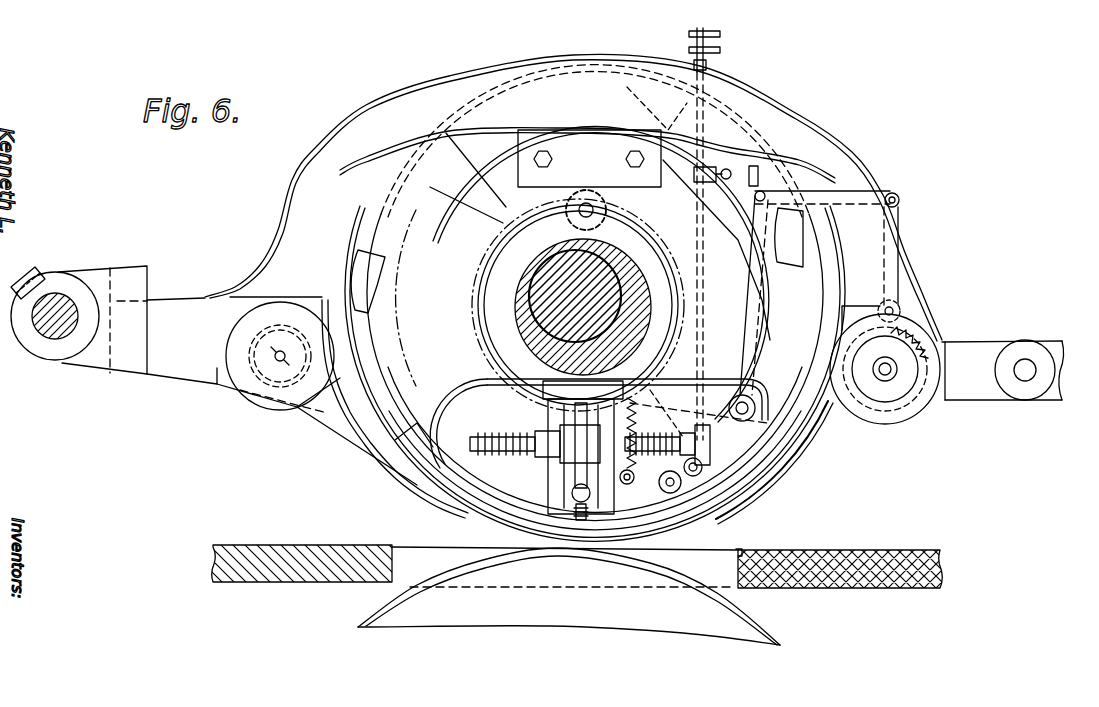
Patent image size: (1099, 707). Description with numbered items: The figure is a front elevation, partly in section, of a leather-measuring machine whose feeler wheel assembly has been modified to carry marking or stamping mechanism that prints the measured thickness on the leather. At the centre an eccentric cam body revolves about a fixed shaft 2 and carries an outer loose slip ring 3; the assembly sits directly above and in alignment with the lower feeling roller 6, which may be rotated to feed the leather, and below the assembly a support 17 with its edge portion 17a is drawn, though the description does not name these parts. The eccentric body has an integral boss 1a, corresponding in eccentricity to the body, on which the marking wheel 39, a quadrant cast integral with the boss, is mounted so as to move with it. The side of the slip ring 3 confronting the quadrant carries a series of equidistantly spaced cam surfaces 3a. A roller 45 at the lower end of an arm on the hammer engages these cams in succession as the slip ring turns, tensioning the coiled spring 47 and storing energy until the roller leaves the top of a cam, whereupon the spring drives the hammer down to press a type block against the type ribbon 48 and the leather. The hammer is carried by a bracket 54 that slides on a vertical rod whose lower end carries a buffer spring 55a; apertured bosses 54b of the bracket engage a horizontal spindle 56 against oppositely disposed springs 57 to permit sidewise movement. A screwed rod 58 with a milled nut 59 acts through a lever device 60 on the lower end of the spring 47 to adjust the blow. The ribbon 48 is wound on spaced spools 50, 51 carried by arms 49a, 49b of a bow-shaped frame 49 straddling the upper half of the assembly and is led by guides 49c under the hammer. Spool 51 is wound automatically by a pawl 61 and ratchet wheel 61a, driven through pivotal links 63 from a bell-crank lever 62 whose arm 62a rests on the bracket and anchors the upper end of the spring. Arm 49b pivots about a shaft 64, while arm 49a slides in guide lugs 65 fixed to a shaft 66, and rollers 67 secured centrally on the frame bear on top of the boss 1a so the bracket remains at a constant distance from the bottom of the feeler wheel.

The boss of eccentric body 1a is at (648, 237).
The shaft 2 is at (556, 296).
The slip ring 3 is at (453, 117).
The cam surfaces 3a is at (497, 129).
The lower feeling roller 6 is at (713, 627).
The rail 17 is at (887, 555).
The rail head edge 17a is at (745, 550).
The marking wheel 39 is at (420, 183).
The roller 45 is at (608, 488).
The coiled spring 47 is at (728, 392).
The type ribbon 48 is at (425, 500).
The bow-shaped frame 49 is at (810, 138).
The frame arm 49a is at (183, 360).
The frame arm 49b is at (978, 388).
The ribbon guides 49c is at (380, 443).
The spool 50 is at (272, 408).
The spool 51 is at (898, 418).
The hammer bracket 54 is at (546, 409).
The apertured bosses 54b is at (545, 450).
The buffer spring 55a is at (596, 528).
The horizontal spindle 56 is at (470, 438).
The springs 57 is at (508, 452).
The screwed rod 58 is at (704, 262).
The milled nut 59 is at (718, 42).
The lever device 60 is at (690, 488).
The pawl 61 is at (900, 312).
The ratchet wheel 61a is at (926, 338).
The bell-crank lever 62 is at (748, 330).
The arm of bell-crank lever 62a is at (690, 400).
The pivotal links 63 is at (900, 214).
The shaft or spindle 64 is at (1028, 381).
The guide lugs 65 is at (125, 268).
The shaft 66 is at (55, 330).
The rollers 67 is at (600, 210).